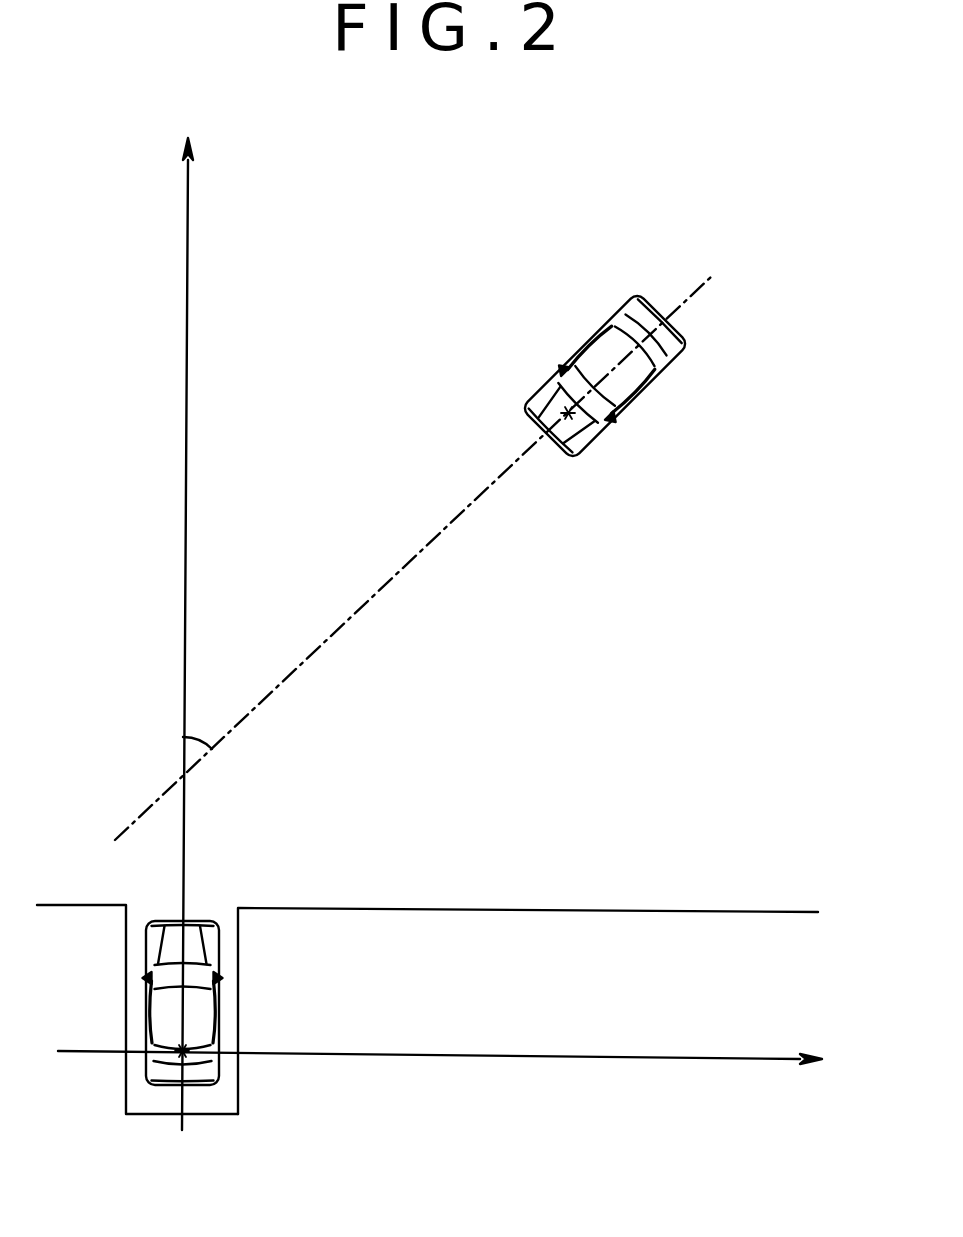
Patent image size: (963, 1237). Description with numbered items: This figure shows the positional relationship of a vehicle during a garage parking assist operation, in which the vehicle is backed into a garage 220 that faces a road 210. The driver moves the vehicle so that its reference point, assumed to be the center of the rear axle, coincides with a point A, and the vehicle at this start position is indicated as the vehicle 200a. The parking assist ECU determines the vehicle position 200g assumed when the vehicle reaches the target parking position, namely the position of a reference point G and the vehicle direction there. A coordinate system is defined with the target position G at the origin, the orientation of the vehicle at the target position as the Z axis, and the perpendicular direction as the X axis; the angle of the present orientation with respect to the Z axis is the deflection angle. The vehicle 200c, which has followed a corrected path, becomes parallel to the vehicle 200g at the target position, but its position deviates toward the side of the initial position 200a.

The vehicle at parking assist start position 200a is at (663, 378).
The vehicle position at target parking position 200g is at (195, 920).
The vehicle that has followed corrected path 200c is at (238, 965).
The road 210 is at (746, 691).
The garage 220 is at (126, 957).
The reference point at target position G is at (193, 1048).
The reference point at initial position A is at (547, 397).